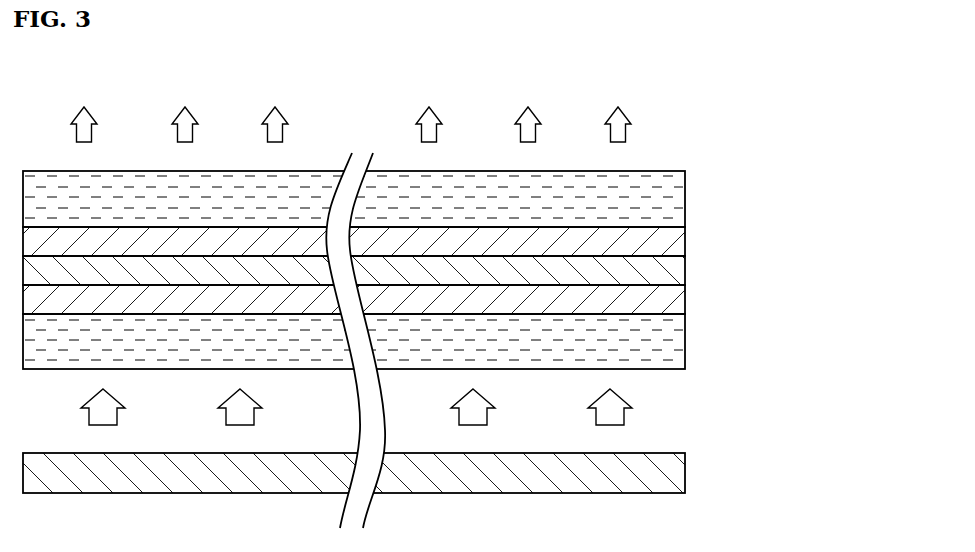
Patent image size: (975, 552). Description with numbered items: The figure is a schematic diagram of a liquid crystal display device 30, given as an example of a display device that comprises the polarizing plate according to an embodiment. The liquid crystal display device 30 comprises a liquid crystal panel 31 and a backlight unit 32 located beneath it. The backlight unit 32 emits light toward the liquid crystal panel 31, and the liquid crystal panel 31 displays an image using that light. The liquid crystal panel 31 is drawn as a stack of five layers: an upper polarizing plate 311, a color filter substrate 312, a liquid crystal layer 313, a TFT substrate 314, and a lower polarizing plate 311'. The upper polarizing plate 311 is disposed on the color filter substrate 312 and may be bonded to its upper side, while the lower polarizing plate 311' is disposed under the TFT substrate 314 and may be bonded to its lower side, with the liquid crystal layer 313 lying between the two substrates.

The liquid crystal display device 30 is at (84, 88).
The liquid crystal panel 31 is at (436, 270).
The upper polarizing plate 311 is at (411, 199).
The color filter substrate 312 is at (675, 241).
The liquid crystal layer 313 is at (675, 274).
The TFT substrate 314 is at (675, 307).
The lower polarizing plate 311' is at (415, 341).
The backlight unit 32 is at (675, 476).